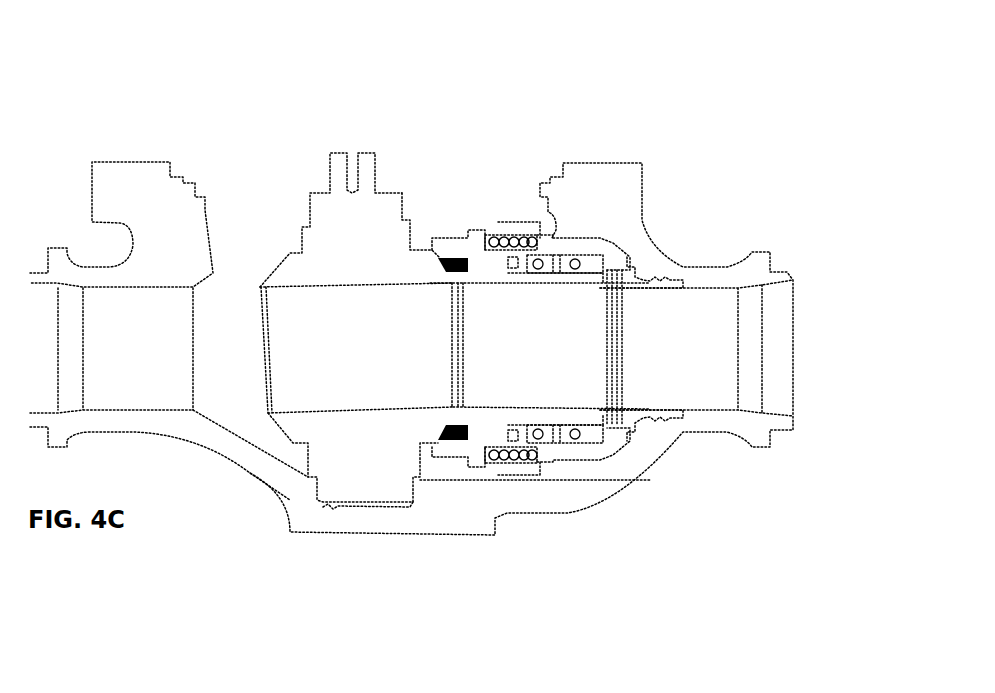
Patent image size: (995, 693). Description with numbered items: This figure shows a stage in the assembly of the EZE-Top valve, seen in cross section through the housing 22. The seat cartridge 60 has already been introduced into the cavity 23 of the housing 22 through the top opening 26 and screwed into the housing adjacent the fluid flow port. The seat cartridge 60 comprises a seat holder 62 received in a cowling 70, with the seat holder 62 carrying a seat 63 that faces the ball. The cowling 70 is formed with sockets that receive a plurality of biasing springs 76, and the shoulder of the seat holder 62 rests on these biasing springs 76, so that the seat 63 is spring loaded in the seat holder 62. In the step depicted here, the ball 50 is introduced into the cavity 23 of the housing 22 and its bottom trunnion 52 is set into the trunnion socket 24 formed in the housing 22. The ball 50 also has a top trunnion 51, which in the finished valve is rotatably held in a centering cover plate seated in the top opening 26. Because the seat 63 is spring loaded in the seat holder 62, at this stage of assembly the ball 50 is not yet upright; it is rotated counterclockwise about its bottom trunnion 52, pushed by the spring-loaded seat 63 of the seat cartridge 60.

The housing 22 is at (148, 197).
The cavity 23 is at (230, 375).
The trunnion socket 24 is at (362, 508).
The top opening 26 is at (475, 210).
The ball 50 is at (370, 284).
The top trunnion 51 is at (367, 234).
The bottom trunnion 52 is at (377, 499).
The seat cartridge 60 is at (596, 393).
The seat holder 62 is at (518, 277).
The seat 63 is at (447, 263).
The cowling 70 is at (578, 250).
The biasing springs 76 is at (485, 238).